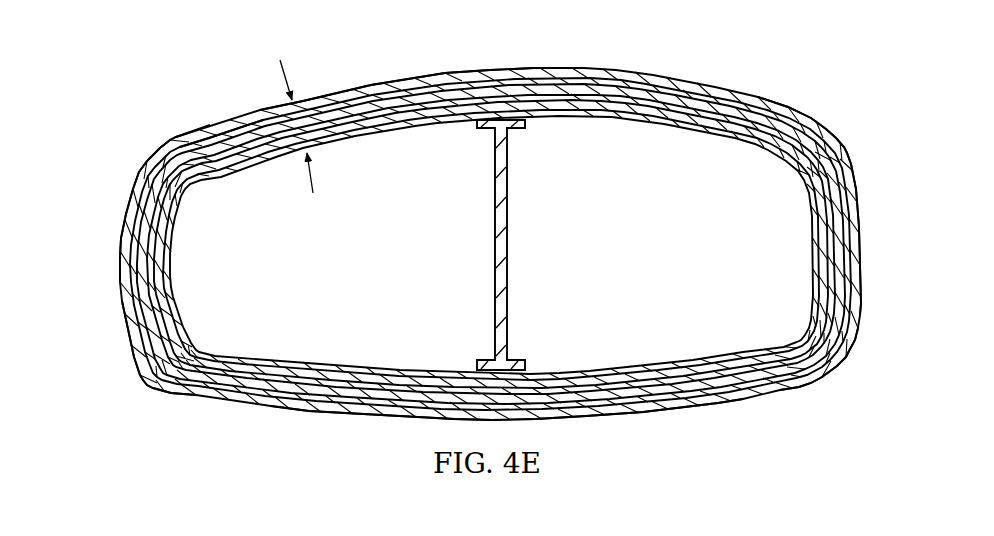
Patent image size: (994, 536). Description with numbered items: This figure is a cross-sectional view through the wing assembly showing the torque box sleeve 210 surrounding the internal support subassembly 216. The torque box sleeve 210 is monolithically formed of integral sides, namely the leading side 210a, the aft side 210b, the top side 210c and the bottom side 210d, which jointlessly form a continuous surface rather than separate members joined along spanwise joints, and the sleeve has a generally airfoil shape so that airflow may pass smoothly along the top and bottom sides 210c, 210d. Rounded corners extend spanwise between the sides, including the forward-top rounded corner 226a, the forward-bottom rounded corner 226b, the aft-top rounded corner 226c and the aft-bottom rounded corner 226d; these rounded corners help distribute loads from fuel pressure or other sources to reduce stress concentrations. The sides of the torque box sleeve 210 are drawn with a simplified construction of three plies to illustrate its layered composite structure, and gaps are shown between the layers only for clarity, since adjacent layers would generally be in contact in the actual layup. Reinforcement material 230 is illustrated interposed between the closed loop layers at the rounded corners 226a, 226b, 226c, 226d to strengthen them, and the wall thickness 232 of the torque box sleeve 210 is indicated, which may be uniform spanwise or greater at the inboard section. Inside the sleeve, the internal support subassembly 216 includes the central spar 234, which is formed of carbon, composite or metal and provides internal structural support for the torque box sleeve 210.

The torque box sleeve 210 is at (588, 68).
The leading side 210a is at (864, 218).
The aft side 210b is at (118, 265).
The top side 210c is at (465, 72).
The bottom side 210d is at (298, 413).
The internal support subassembly 216 is at (527, 245).
The forward-top rounded corner 226a is at (815, 127).
The forward-bottom rounded corner 226b is at (812, 387).
The aft-top rounded corner 226c is at (143, 165).
The aft-bottom rounded corner 226d is at (152, 380).
The reinforcement material 230 is at (197, 147).
The wall thickness 232 is at (290, 67).
The central spar 234 is at (508, 290).